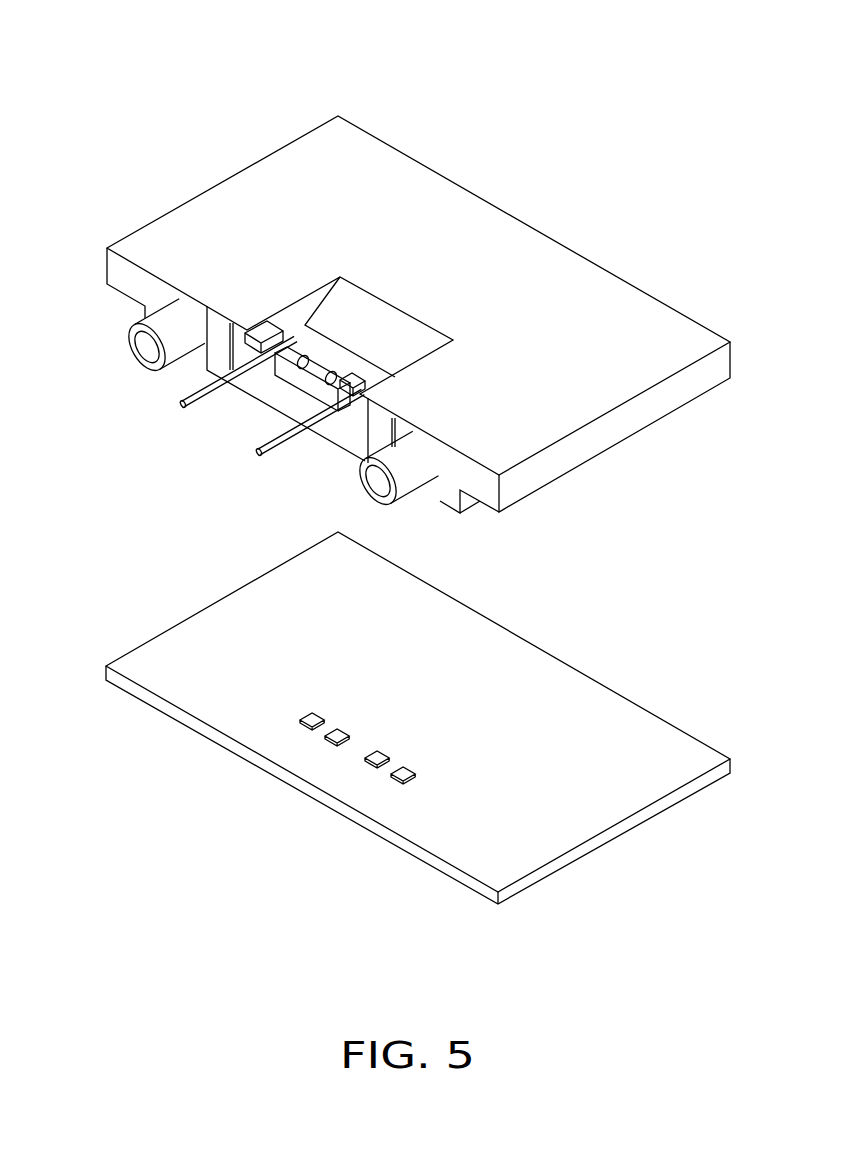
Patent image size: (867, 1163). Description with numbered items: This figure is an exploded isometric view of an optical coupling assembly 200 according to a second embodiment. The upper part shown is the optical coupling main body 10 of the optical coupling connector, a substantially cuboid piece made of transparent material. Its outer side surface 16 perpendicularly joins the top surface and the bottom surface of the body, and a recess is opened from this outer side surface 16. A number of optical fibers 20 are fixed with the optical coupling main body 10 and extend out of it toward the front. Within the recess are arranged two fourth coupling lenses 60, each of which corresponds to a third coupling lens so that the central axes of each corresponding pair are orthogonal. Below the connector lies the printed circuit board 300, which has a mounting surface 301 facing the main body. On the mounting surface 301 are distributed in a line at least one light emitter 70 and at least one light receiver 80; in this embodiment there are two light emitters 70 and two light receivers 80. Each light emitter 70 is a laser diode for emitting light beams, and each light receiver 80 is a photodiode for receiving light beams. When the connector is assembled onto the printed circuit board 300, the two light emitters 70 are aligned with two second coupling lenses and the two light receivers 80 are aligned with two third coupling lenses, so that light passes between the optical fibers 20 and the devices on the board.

The optical coupling assembly 200 is at (467, 63).
The optical coupling main body 10 is at (270, 190).
The outer side surface 16 is at (122, 278).
The optical fibers 20 is at (182, 392).
The fourth coupling lenses 60 is at (297, 362).
The light emitters 70 is at (305, 727).
The light receivers 80 is at (368, 762).
The printed circuit board 300 is at (607, 835).
The mounting surface 301 is at (607, 722).